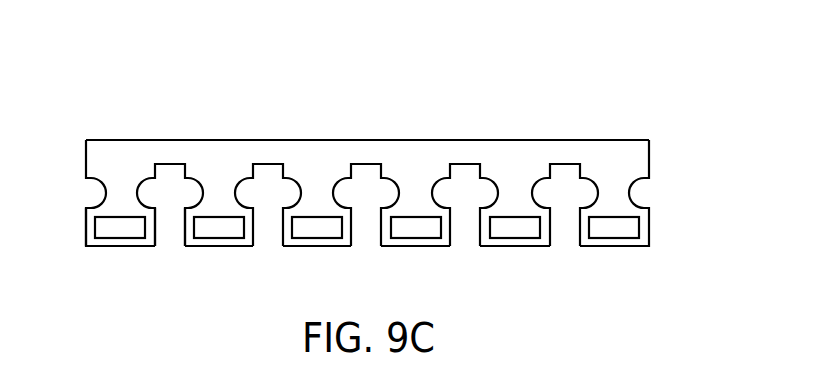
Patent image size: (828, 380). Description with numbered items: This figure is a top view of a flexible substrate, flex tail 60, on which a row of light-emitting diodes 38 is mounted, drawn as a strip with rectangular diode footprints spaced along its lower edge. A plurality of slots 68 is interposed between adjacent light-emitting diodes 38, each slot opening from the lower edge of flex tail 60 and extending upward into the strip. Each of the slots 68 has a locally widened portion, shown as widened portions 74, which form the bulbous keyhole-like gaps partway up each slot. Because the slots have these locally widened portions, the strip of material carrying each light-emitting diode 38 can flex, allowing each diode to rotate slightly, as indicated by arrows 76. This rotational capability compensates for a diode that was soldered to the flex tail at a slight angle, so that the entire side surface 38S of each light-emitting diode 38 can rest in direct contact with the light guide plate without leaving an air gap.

The flex tail 60 is at (428, 146).
The widened portions 74 is at (586, 193).
The slots 68 is at (362, 243).
The side surface 38S is at (418, 240).
The light-emitting diodes 38 is at (517, 227).
The arrows 76 is at (65, 227).